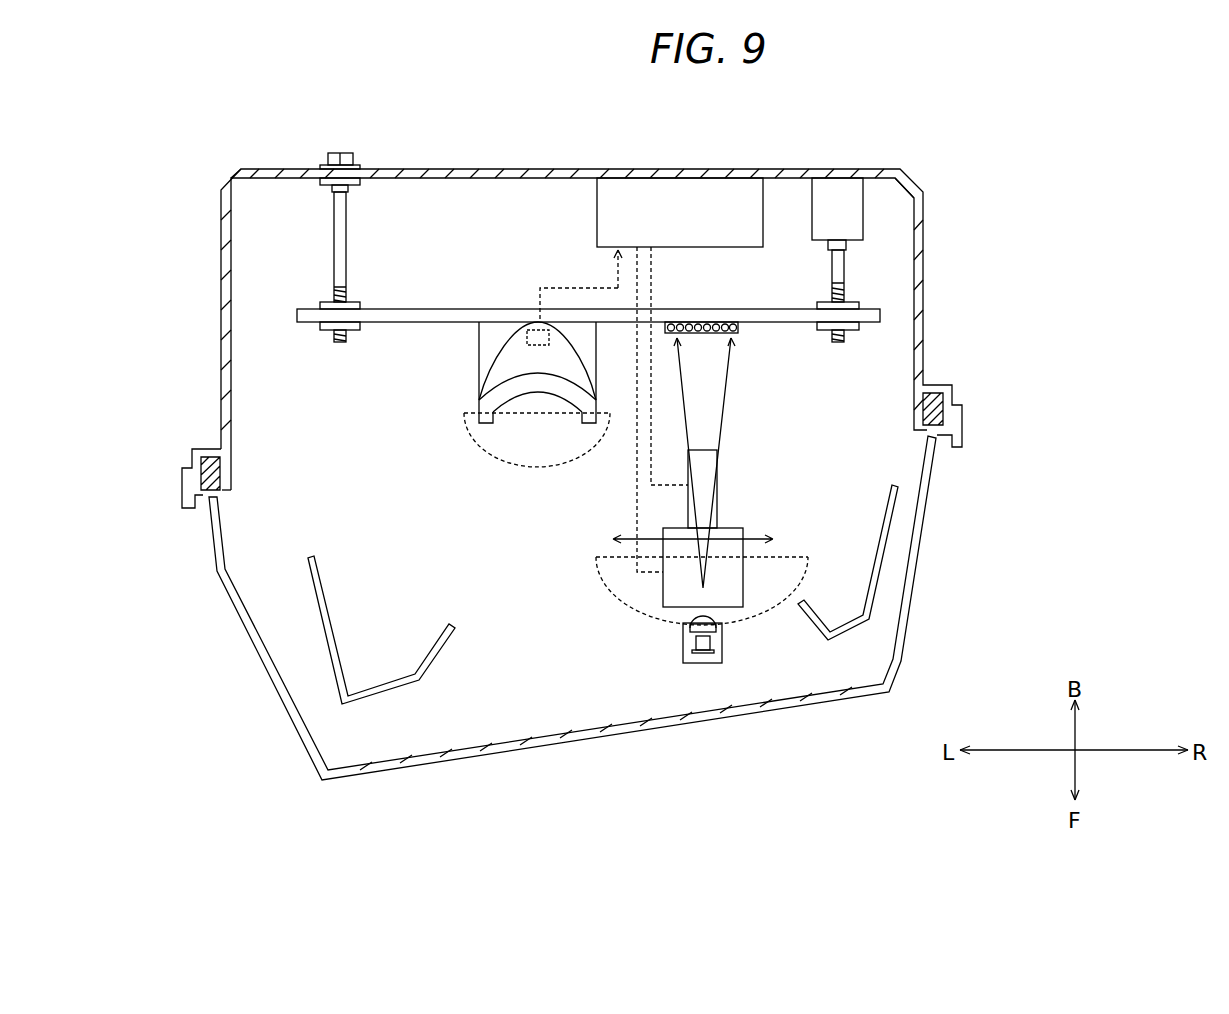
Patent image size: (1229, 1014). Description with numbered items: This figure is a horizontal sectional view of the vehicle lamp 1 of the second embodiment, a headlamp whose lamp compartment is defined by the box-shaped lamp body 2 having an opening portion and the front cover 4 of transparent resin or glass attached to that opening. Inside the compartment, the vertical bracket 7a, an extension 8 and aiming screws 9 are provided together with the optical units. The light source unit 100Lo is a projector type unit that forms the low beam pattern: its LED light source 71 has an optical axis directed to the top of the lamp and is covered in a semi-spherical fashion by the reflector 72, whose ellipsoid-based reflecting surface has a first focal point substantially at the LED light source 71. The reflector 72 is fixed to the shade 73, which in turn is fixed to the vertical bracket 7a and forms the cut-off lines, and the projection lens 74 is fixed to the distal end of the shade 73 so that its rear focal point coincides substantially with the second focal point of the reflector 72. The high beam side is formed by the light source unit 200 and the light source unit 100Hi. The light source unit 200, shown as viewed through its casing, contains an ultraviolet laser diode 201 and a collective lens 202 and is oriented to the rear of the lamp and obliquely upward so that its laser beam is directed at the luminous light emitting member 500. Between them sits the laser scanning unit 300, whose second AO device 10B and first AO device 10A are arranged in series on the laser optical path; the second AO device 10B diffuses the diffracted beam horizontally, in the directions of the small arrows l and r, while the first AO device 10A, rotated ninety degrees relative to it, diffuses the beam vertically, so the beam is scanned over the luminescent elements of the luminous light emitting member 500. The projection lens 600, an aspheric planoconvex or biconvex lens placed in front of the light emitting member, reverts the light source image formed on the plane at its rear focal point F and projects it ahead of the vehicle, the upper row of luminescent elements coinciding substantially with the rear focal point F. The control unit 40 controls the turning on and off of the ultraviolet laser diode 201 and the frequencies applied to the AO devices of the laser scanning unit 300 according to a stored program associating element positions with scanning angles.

The vehicle lamp 1 is at (985, 144).
The lamp body 2 is at (923, 232).
The front cover 4 is at (934, 476).
The vertical bracket 7a is at (880, 316).
The extension 8 is at (333, 657).
The aiming screws 9 is at (334, 228).
The first AO device 10A is at (718, 497).
The second AO device 10B is at (738, 575).
The control unit 40 is at (686, 192).
The LED light source 71 is at (535, 322).
The reflector 72 is at (570, 362).
The shade 73 is at (490, 342).
The projection lens 74 is at (520, 468).
The light source unit 100Lo is at (461, 403).
The light source unit 100Hi is at (749, 448).
The light source unit 200 is at (683, 641).
The ultraviolet laser diode 201 is at (700, 655).
The collective lens 202 is at (722, 630).
The laser scanning unit 300 is at (818, 523).
The luminous light emitting member 500 is at (737, 322).
The projection lens 600 is at (762, 615).
The rear focal point F is at (707, 315).